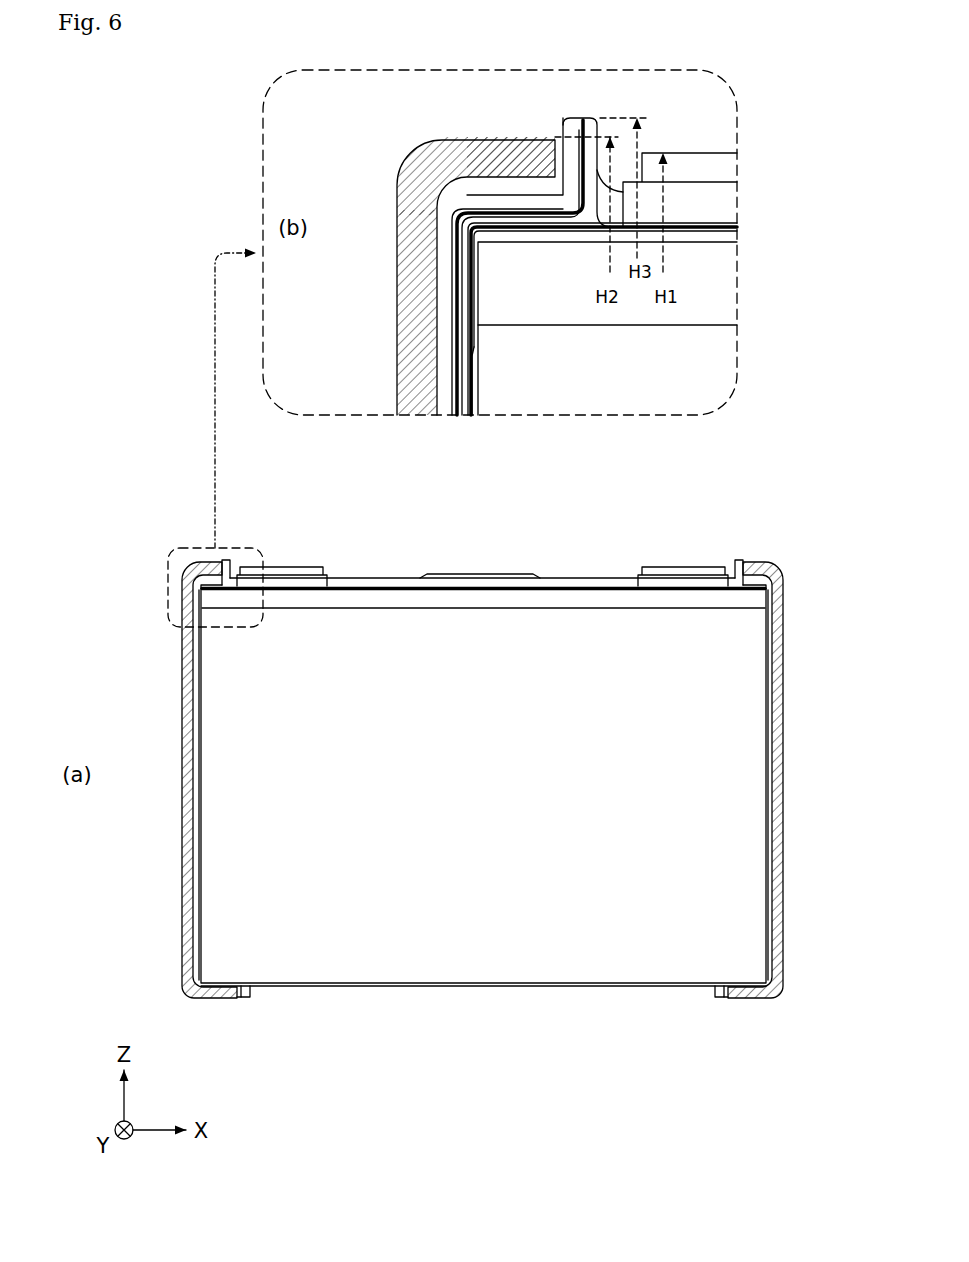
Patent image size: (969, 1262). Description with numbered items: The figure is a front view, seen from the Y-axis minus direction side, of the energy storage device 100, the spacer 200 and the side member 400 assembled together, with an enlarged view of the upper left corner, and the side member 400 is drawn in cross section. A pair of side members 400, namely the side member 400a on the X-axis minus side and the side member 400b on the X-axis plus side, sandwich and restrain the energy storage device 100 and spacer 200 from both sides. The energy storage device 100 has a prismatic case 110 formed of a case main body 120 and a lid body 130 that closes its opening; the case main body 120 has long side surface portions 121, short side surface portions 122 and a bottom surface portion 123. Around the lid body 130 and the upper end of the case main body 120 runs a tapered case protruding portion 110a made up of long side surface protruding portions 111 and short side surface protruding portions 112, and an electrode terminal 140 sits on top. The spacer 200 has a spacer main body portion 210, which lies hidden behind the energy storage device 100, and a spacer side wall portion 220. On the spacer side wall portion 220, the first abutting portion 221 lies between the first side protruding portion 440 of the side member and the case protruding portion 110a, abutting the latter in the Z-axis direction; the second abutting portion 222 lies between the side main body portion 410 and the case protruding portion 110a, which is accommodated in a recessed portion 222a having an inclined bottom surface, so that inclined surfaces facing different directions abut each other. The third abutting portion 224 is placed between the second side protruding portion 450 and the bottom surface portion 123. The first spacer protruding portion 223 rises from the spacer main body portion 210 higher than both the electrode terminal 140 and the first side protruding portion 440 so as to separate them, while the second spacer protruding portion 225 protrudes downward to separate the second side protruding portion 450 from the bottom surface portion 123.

The energy storage device 100 is at (364, 519).
The case 110 is at (364, 1058).
The case protruding portion 110a is at (828, 582).
The long side surface protruding portion 111 is at (474, 600).
The short side surface protruding portion 112 is at (200, 597).
The case main body 120 is at (416, 995).
The long side surface portion 121 is at (521, 953).
The short side surface portion 122 is at (199, 740).
The bottom surface portion 123 is at (612, 983).
The lid body 130 is at (345, 578).
The electrode terminal 140 is at (281, 567).
The spacer 200 is at (482, 558).
The spacer main body portion 210 is at (421, 577).
The spacer side wall portion 220 is at (190, 676).
The first abutting portion 221 is at (500, 207).
The second abutting portion 222 is at (452, 222).
The recessed portion 222a is at (478, 284).
The first spacer protruding portion 223 is at (226, 560).
The third abutting portion 224 is at (226, 998).
The second spacer protruding portion 225 is at (252, 992).
The side member 400 is at (146, 856).
The side member 400a is at (209, 780).
The side member 400b is at (755, 780).
The side main body portion 410 is at (184, 787).
The first side protruding portion 440 is at (206, 563).
The second side protruding portion 450 is at (213, 998).